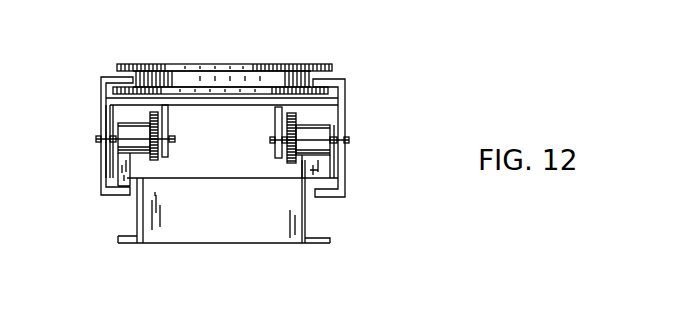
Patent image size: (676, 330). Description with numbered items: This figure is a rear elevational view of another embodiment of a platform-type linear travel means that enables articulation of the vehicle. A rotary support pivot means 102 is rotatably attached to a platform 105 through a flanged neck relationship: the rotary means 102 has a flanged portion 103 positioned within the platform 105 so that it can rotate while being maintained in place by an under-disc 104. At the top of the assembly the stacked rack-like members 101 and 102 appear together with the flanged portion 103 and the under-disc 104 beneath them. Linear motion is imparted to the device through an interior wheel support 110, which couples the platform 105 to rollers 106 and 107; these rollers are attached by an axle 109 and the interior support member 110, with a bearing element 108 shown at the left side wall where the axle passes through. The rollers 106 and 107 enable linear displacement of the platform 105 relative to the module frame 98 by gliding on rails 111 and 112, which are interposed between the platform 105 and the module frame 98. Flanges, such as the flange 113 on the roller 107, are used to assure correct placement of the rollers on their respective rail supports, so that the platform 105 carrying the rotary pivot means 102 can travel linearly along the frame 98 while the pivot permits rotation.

The module frame 98 is at (307, 225).
The upper rack 101 is at (332, 69).
The rotary support pivot means 102 is at (165, 66).
The flanged portion 103 is at (272, 80).
The under-disc 104 is at (330, 94).
The platform 105 is at (344, 160).
The roller 106 is at (318, 137).
The roller 107 is at (133, 132).
The bearing plate 108 is at (112, 147).
The axle 109 is at (175, 137).
The interior wheel support 110 is at (168, 118).
The rail 111 is at (127, 195).
The rail 112 is at (322, 170).
The flange 113 is at (148, 165).